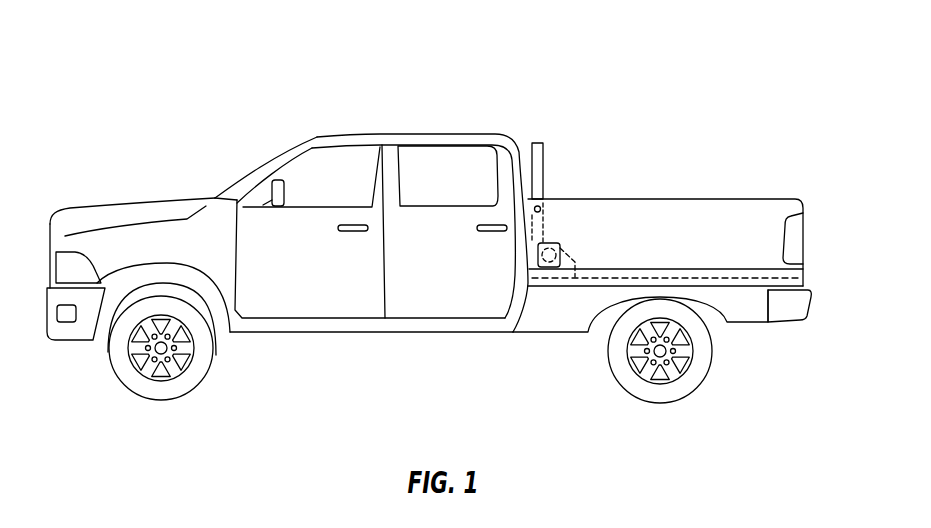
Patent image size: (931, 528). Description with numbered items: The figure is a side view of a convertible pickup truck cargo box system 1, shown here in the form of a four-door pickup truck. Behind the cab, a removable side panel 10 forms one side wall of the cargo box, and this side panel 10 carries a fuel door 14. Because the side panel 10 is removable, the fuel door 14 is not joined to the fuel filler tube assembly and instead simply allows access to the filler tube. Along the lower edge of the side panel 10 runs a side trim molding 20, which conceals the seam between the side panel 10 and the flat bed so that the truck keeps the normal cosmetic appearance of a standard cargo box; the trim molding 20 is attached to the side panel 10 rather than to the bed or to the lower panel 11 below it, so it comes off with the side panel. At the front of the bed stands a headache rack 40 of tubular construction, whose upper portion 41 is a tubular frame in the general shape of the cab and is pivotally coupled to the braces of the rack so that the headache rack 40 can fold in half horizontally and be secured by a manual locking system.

The convertible pickup truck cargo box system 1 is at (147, 113).
The side panel 10 is at (693, 227).
The lower panel 11 is at (572, 322).
The fuel door 14 is at (560, 247).
The side trim molding 20 is at (800, 285).
The headache rack 40 is at (550, 187).
The upper portion 41 is at (537, 168).